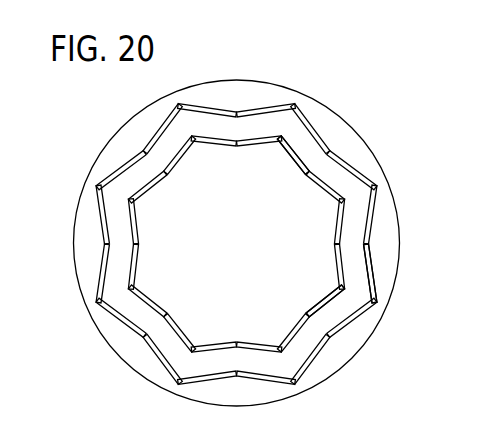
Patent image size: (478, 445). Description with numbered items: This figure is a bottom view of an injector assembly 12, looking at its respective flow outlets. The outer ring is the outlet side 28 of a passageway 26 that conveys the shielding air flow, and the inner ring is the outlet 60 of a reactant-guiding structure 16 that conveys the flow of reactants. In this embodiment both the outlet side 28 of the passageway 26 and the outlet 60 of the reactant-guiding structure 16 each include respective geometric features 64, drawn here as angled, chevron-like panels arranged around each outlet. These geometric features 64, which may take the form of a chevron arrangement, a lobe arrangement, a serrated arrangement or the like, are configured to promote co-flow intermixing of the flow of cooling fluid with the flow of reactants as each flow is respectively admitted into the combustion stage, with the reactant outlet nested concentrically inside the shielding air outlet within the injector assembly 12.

The injector assembly 12 is at (312, 88).
The reactant-guiding structure 16 is at (252, 256).
The passageway 26 is at (355, 218).
The outlet side 28 is at (123, 167).
The outlet 60 is at (292, 163).
The geometric features 64 is at (375, 273).